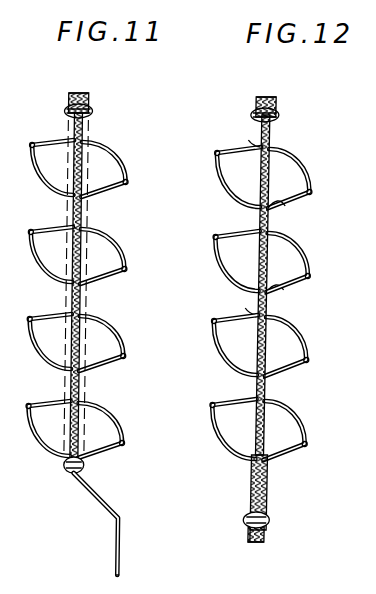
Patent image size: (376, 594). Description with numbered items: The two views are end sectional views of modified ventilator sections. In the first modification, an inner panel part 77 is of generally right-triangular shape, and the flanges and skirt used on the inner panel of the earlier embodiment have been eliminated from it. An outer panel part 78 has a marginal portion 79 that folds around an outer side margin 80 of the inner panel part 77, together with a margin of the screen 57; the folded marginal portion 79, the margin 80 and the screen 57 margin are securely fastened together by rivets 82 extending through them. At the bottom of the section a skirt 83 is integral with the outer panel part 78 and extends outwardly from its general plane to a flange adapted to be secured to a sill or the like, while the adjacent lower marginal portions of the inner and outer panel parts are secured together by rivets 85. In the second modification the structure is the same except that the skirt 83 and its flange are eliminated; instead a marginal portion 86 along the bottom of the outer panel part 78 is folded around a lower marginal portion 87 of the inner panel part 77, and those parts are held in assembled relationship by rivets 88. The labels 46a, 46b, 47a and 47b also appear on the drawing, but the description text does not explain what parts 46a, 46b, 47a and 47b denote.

In FIG. 12, the first helical blade segment end 46a is at (250, 146).
In FIG. 12, the second helical blade segment end 46b is at (282, 205).
In FIG. 12, the first blade loop 47a is at (223, 252).
In FIG. 12, the second blade loop 47b is at (305, 185).
In FIG. 11, the screen 57 is at (78, 333).
In FIG. 11, the inner panel part 77 is at (70, 128).
In FIG. 12, the inner panel part 77 is at (256, 215).
In FIG. 11, the outer panel part 78 is at (86, 134).
In FIG. 12, the outer panel part 78 is at (275, 142).
In FIG. 11, the marginal portion 79 is at (71, 95).
In FIG. 12, the marginal portion 79 is at (257, 100).
In FIG. 11, the outer side margin 80 is at (90, 99).
In FIG. 12, the outer side margin 80 is at (278, 100).
In FIG. 11, the rivets 82 is at (94, 111).
In FIG. 12, the rivets 82 is at (281, 114).
In FIG. 11, the skirt 83 is at (110, 507).
In FIG. 11, the rivets 85 is at (90, 465).
In FIG. 12, the marginal portion 86 is at (250, 535).
In FIG. 11, the lower marginal portion 87 is at (121, 549).
In FIG. 12, the lower marginal portion 87 is at (259, 541).
In FIG. 12, the rivets 88 is at (271, 518).